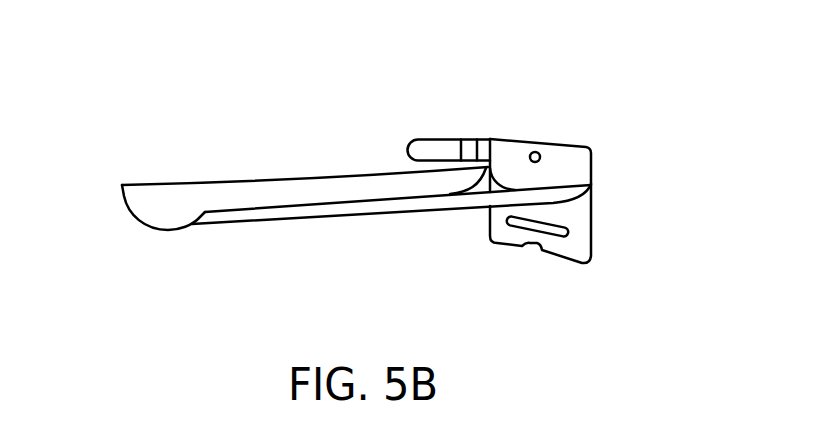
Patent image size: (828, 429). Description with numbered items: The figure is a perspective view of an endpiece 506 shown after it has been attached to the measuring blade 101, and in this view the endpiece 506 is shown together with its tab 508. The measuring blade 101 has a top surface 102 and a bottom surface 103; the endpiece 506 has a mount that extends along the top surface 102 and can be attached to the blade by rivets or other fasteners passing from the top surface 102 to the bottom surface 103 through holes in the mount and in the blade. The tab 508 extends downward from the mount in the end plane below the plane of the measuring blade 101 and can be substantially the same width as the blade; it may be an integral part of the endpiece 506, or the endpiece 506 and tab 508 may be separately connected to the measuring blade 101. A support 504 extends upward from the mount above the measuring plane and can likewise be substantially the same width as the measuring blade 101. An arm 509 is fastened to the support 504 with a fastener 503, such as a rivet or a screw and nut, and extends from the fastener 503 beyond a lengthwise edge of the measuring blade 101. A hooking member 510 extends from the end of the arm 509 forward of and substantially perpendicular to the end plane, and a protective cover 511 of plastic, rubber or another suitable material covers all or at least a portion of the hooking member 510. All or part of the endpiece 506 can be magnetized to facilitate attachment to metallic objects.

The measuring blade 101 is at (127, 208).
The top surface 102 is at (220, 192).
The bottom surface 103 is at (253, 223).
The fastener 503 is at (538, 151).
The support 504 is at (567, 170).
The endpiece 506 is at (614, 182).
The tab 508 is at (580, 236).
The arm 509 is at (480, 147).
The hooking member 510 is at (464, 146).
The protective cover 511 is at (428, 143).